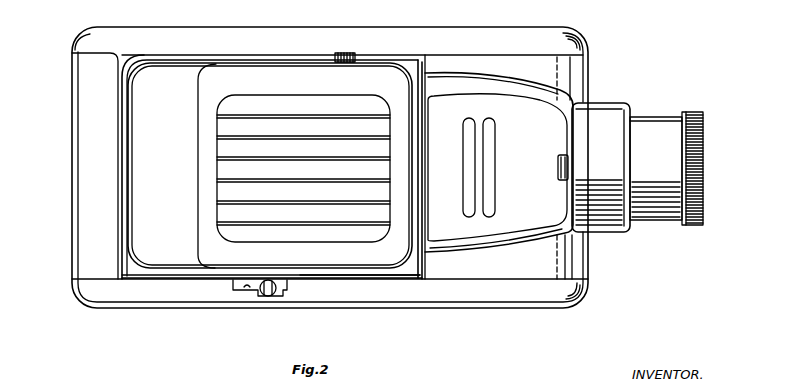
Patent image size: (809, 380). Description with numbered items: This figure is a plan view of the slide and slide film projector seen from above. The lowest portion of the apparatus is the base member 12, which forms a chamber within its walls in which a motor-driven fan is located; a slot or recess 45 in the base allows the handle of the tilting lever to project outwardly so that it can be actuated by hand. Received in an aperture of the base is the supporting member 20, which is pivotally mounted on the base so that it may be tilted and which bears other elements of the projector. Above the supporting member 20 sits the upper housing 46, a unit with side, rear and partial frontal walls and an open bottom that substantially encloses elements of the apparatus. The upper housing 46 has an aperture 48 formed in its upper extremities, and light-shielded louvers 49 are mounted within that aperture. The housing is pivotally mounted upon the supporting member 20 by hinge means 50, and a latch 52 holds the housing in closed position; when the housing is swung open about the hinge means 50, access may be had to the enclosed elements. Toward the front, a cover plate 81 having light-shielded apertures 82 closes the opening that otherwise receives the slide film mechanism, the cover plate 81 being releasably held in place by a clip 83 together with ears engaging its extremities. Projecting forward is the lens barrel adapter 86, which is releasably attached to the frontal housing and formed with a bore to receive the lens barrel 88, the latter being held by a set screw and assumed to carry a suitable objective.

The base member 12 is at (433, 301).
The supporting member 20 is at (321, 272).
The slot or recess 45 is at (242, 292).
The upper housing 46 is at (175, 173).
The aperture 48 is at (326, 238).
The light-shielded louvers 49 is at (307, 176).
The hinge means 50 is at (128, 242).
The latch 52 is at (341, 55).
The cover plate 81 is at (532, 176).
The light-shielded apertures 82 is at (501, 138).
The clip 83 is at (560, 170).
The lens barrel adapter 86 is at (608, 160).
The lens barrel 88 is at (660, 160).